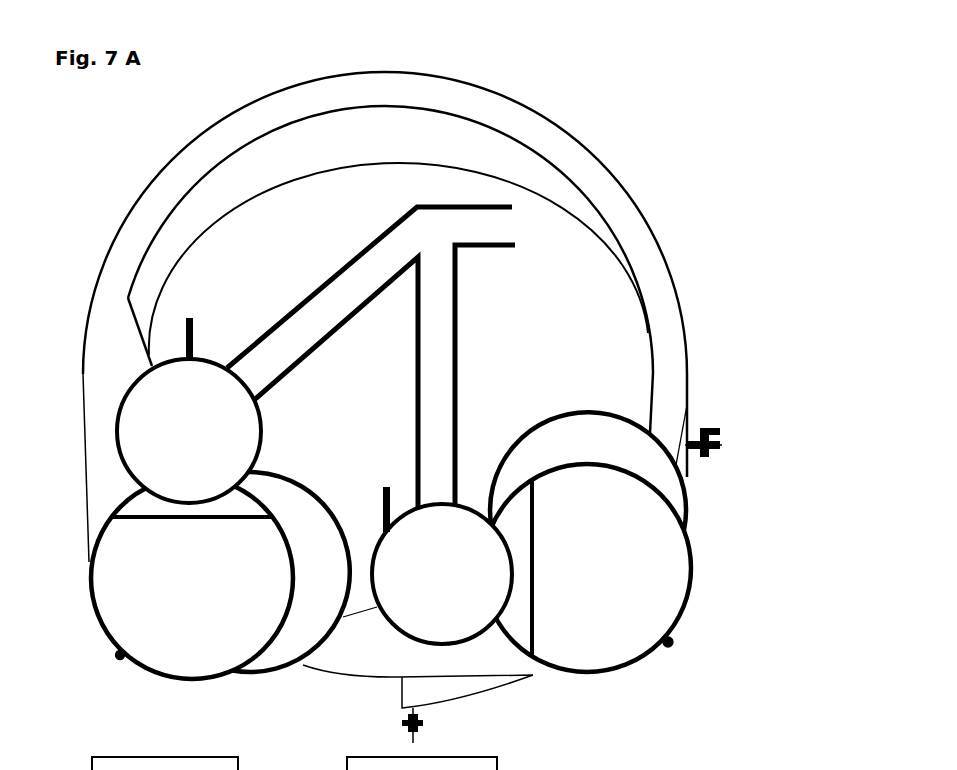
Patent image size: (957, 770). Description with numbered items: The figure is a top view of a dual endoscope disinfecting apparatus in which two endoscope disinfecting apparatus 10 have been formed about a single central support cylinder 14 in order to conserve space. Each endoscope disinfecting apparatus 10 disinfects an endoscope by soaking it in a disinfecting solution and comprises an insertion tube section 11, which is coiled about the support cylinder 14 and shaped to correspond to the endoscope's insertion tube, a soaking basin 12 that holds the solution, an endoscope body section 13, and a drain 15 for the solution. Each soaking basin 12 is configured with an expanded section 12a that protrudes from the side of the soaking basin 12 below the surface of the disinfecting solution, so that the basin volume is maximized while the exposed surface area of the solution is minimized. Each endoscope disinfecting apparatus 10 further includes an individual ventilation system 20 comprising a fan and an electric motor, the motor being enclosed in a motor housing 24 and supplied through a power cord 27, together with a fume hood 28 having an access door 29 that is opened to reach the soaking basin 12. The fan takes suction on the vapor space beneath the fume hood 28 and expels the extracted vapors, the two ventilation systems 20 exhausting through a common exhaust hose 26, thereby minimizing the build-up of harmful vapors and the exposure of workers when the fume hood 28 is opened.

The endoscope disinfecting apparatus 10 is at (471, 507).
The insertion tube section 11 is at (497, 90).
The soaking basin 12 is at (607, 416).
The expanded section 12a is at (305, 638).
The endoscope body section 13 is at (108, 345).
The support cylinder 14 is at (331, 153).
The drain 15 is at (722, 448).
The ventilation system 20 is at (63, 472).
The motor housing 24 is at (201, 439).
The exhaust hose 26 is at (320, 310).
The power cord 27 is at (386, 510).
The fume hood 28 is at (245, 497).
The access door 29 is at (209, 630).